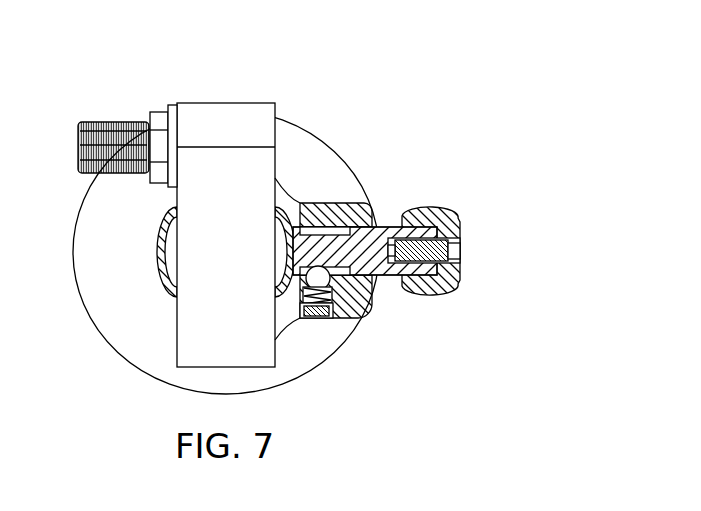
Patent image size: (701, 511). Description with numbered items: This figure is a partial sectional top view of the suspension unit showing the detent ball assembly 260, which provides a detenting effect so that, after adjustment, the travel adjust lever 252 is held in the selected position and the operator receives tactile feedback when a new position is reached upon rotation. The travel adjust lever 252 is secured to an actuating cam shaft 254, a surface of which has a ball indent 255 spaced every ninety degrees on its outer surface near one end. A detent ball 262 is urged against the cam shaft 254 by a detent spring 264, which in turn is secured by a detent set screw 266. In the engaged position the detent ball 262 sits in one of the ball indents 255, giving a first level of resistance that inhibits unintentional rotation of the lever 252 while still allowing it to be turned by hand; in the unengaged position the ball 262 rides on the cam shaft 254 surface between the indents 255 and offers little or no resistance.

The travel adjust lever 252 is at (447, 218).
The actuating cam shaft 254 is at (326, 270).
The ball indent 255 is at (313, 228).
The detent ball assembly 260 is at (304, 406).
The detent ball 262 is at (368, 277).
The detent spring 264 is at (327, 287).
The detent set screw 266 is at (318, 307).